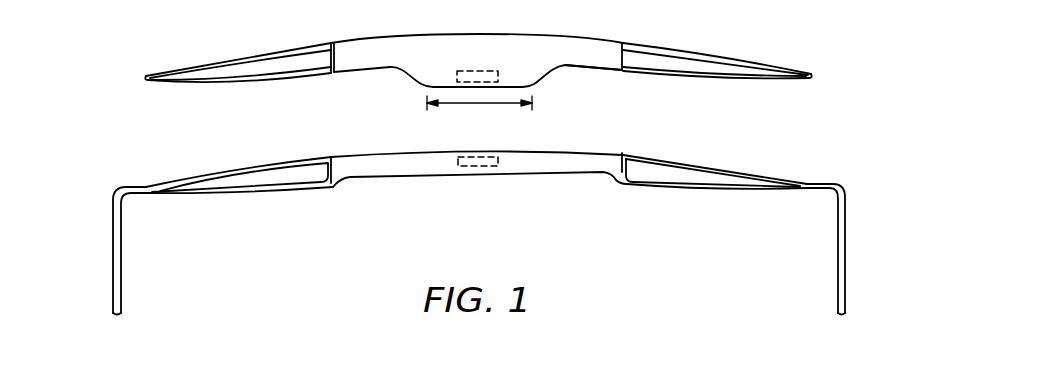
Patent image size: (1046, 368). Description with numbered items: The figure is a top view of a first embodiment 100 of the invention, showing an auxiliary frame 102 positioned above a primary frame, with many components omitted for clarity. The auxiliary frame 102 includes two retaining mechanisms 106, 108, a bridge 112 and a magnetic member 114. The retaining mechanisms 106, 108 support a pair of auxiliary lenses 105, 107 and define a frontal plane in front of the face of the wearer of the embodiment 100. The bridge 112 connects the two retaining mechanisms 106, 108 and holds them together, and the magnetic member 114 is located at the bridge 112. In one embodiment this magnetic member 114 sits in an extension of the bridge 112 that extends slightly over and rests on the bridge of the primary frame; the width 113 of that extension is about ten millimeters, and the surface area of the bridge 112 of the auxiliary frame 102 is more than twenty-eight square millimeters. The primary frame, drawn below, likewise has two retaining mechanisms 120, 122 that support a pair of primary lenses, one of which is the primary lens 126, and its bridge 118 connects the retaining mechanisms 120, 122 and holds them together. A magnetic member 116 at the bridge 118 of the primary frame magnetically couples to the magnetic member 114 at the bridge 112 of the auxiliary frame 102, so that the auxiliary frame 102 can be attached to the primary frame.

The first embodiment 100 is at (900, 48).
The auxiliary frame 102 is at (805, 72).
The auxiliary lens 105 is at (285, 65).
The retaining mechanism 106 is at (188, 65).
The auxiliary lens 107 is at (670, 63).
The retaining mechanism 108 is at (748, 60).
The bridge 112 is at (608, 70).
The width 113 is at (479, 113).
The magnetic member 114 is at (499, 74).
The magnetic member 116 is at (480, 168).
The bridge 118 is at (567, 172).
The retaining mechanism 120 is at (252, 192).
The retaining mechanism 122 is at (723, 190).
The primary lens 126 is at (272, 178).